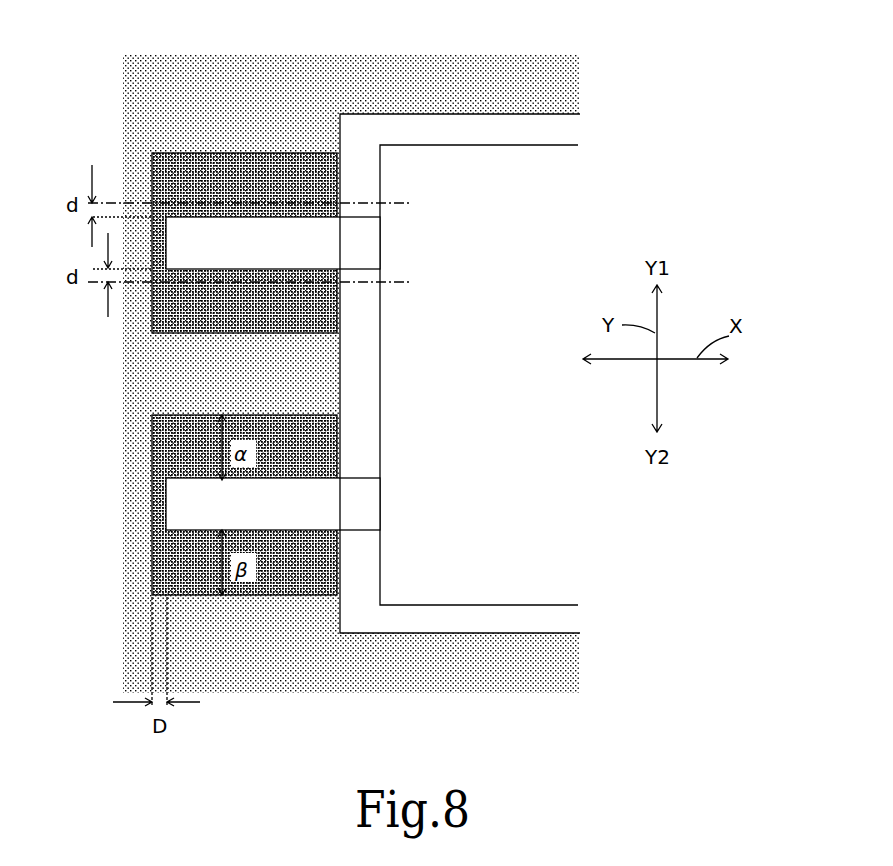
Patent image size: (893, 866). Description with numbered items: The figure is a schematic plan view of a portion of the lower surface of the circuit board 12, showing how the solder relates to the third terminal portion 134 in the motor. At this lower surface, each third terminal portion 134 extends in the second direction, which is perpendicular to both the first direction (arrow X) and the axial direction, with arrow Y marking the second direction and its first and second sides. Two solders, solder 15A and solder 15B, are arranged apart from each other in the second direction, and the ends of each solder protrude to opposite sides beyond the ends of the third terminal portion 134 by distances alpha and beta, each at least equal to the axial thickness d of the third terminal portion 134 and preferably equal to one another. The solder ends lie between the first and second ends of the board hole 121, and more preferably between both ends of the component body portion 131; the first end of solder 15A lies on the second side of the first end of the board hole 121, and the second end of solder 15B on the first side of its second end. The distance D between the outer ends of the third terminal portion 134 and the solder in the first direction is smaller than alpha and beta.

The circuit board 12 is at (163, 75).
The solder 15A is at (152, 152).
The solder 15B is at (152, 428).
The board hole 121 is at (363, 118).
The component body portion 131 is at (560, 145).
The third terminal portion 134 is at (322, 248).